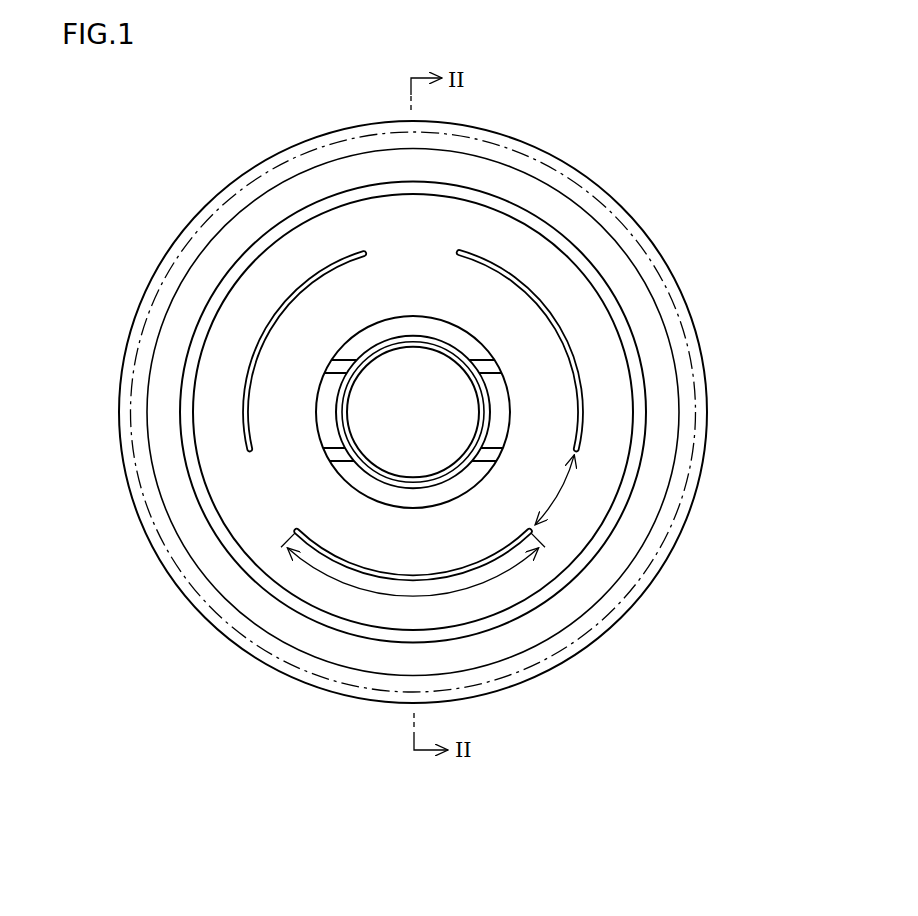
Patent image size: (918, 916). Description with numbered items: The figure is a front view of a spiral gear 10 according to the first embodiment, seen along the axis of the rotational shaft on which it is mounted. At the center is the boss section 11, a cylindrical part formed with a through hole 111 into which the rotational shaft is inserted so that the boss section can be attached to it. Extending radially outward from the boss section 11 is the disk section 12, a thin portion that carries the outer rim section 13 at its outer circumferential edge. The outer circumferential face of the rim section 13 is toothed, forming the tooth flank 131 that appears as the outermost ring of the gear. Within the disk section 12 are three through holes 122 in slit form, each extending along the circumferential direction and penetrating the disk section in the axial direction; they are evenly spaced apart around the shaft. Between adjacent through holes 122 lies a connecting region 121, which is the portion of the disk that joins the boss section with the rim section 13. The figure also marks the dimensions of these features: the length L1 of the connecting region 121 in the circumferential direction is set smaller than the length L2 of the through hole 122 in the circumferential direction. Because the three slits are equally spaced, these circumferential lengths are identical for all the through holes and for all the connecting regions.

The spiral gear 10 is at (572, 128).
The boss section 11 is at (500, 397).
The through hole 111 is at (378, 371).
The disk section 12 is at (603, 470).
The connecting region 121 is at (270, 502).
The through hole 122 is at (347, 562).
The rim section 13 is at (635, 293).
The tooth flank 131 is at (700, 342).
The length of connecting region L1 is at (560, 494).
The length of through hole L2 is at (490, 582).